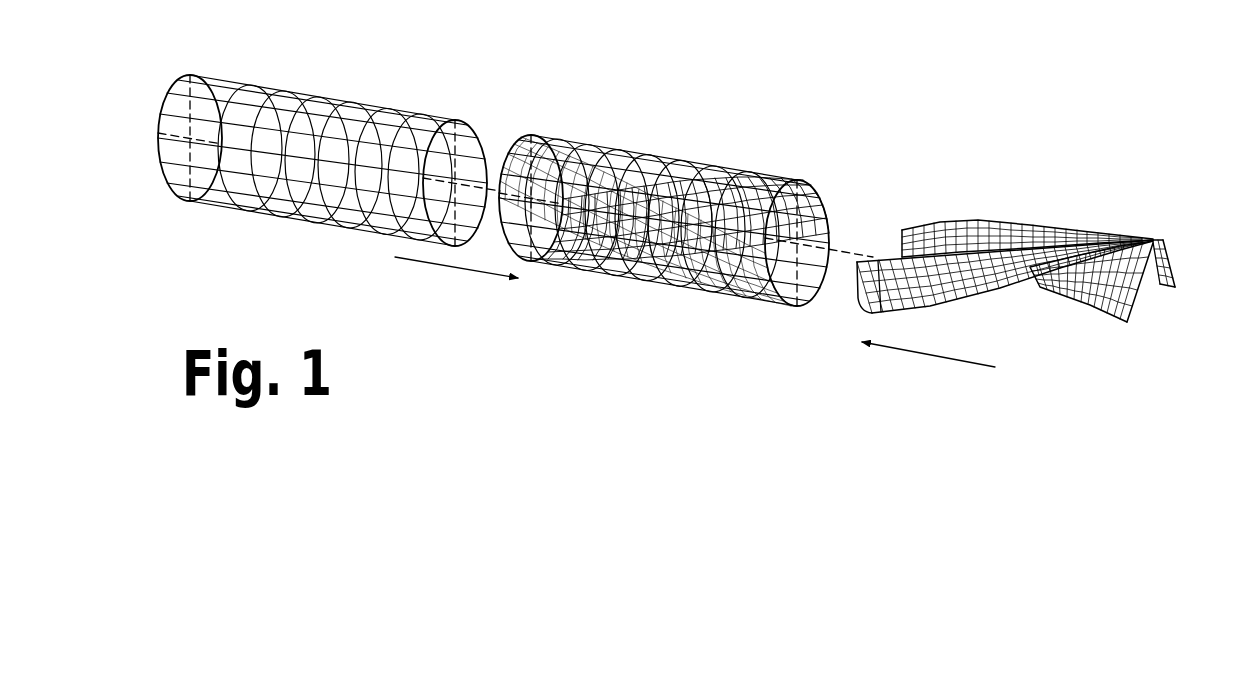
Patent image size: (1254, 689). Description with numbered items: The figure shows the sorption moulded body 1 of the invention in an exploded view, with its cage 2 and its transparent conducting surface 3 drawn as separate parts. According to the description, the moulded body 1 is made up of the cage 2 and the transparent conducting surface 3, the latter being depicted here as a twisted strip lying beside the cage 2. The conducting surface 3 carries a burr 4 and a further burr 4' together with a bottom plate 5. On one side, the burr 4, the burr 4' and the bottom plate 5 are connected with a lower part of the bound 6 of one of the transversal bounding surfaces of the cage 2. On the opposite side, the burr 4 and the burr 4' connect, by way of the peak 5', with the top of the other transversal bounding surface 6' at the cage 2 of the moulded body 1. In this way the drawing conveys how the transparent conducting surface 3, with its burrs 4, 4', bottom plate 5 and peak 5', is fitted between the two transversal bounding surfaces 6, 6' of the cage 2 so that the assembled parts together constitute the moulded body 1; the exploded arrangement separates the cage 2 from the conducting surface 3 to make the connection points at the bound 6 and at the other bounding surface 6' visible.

The moulded body 1 is at (641, 147).
The cage 2 is at (341, 139).
The transparent conducting surface 3 is at (1029, 268).
The burr 4 is at (995, 304).
The burr 4' is at (1058, 236).
The bottom plate 5 is at (875, 242).
The peak 5' is at (1166, 311).
The bound of one transversal bounding surface 6 is at (228, 116).
The other transversal bounding surface 6' is at (474, 156).